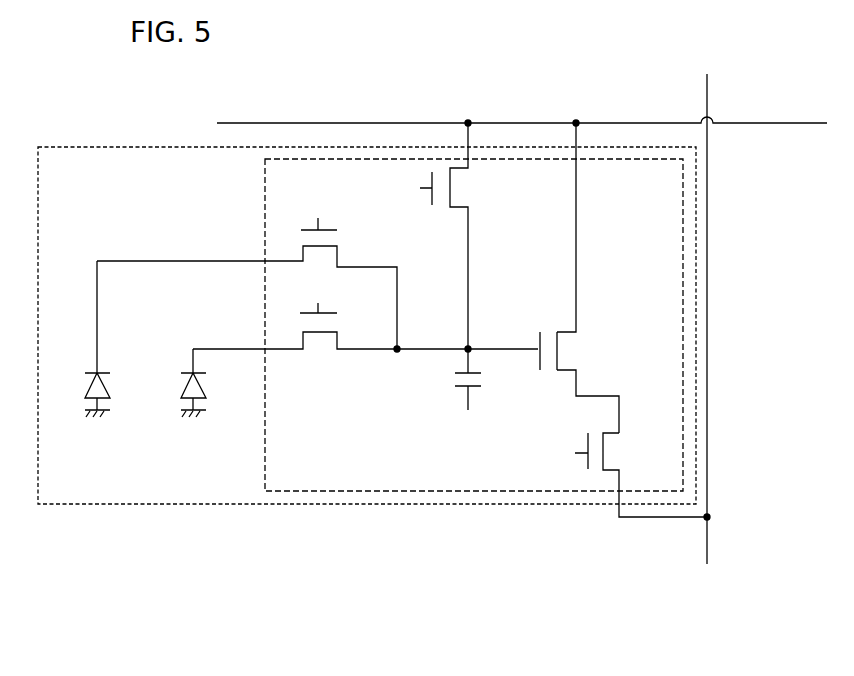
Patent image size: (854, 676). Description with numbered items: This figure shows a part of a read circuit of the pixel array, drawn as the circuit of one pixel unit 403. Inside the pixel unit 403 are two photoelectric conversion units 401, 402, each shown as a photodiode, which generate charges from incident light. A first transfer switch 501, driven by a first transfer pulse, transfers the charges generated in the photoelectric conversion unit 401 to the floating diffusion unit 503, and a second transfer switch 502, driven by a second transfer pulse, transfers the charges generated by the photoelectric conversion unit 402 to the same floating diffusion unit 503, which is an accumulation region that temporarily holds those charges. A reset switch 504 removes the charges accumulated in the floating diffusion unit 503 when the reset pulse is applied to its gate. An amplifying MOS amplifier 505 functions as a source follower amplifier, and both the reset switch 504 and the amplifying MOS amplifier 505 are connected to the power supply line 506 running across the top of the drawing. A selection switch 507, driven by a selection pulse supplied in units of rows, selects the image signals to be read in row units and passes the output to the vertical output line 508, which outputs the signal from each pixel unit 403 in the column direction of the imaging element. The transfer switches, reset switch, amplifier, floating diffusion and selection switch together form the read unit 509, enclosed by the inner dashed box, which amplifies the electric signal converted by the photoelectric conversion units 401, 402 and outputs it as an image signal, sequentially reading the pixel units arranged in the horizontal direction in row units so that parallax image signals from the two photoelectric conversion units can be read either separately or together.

The photoelectric conversion unit 401 is at (128, 376).
The photoelectric conversion unit 402 is at (224, 376).
The pixel unit 403 is at (149, 146).
The first transfer switch 501 is at (339, 251).
The second transfer switch 502 is at (340, 342).
The floating diffusion unit 503 is at (478, 388).
The reset switch 504 is at (452, 184).
The amplifying MOS amplifier 505 is at (560, 345).
The power supply line 506 is at (538, 109).
The selection switch 507 is at (606, 450).
The vertical output line 508 is at (708, 292).
The read unit 509 is at (265, 229).